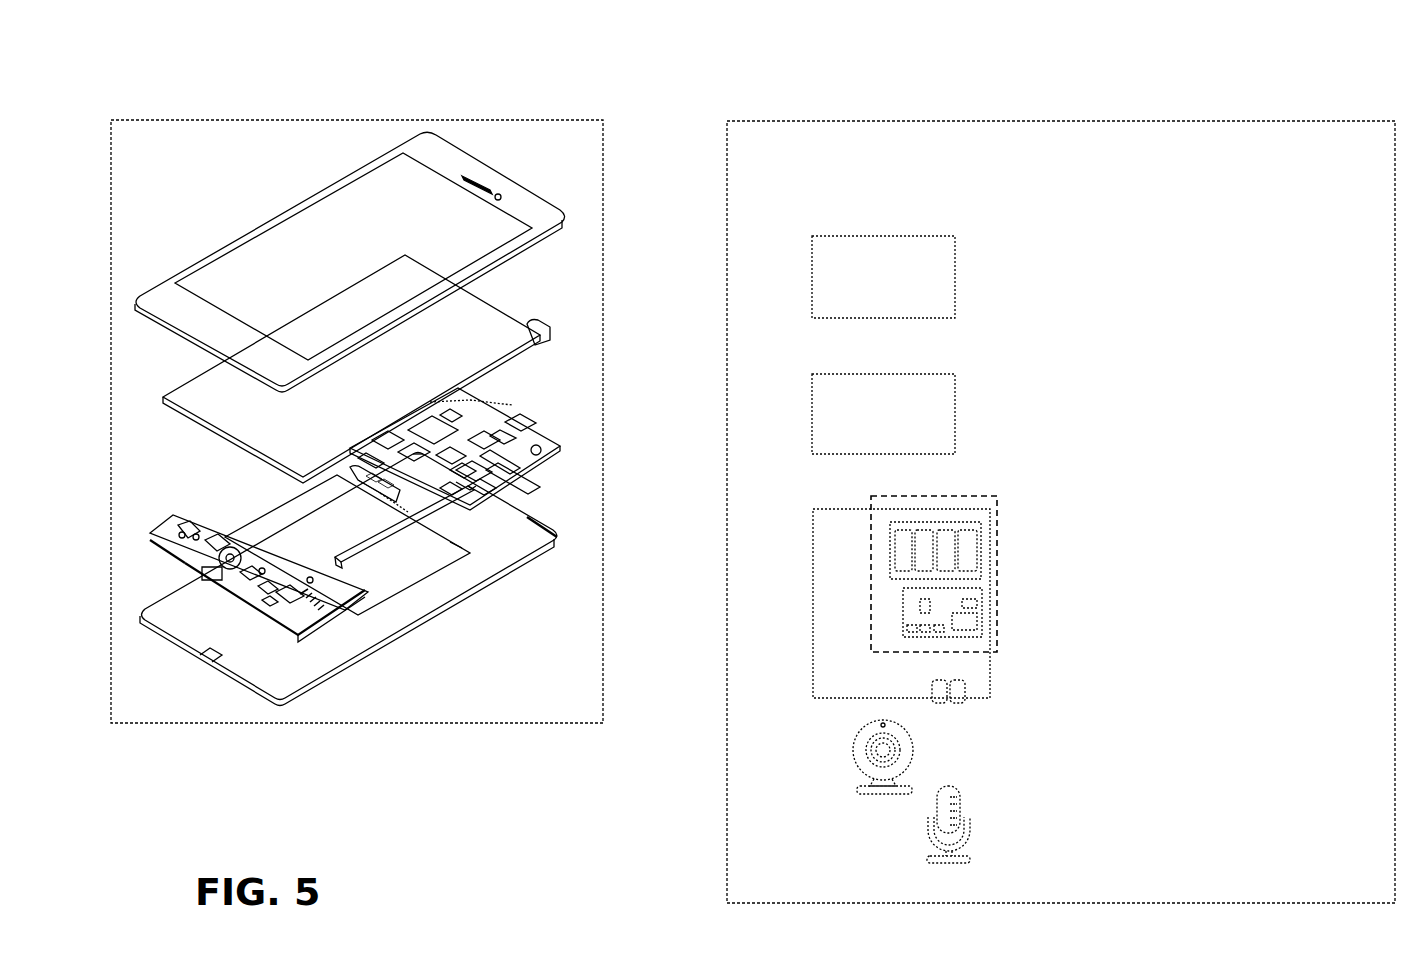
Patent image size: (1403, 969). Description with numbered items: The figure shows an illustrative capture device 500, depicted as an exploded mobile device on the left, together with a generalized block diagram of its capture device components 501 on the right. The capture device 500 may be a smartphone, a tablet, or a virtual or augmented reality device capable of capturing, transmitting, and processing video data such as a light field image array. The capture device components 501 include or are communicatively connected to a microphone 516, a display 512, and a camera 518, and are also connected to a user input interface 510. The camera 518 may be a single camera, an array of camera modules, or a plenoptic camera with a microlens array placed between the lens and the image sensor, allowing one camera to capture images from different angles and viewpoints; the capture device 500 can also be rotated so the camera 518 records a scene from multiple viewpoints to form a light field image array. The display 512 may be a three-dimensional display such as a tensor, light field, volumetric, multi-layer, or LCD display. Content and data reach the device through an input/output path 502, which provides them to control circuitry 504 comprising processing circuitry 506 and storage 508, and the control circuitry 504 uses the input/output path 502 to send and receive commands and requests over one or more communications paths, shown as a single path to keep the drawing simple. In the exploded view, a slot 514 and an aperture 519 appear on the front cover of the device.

The capture device 500 is at (200, 80).
The capture device components 501 is at (1265, 74).
The input/output path 502 is at (238, 563).
The control circuitry 504 is at (870, 582).
The processing circuitry 506 is at (880, 561).
The storage 508 is at (880, 522).
The user input interface 510 is at (466, 340).
The display 512 is at (812, 409).
The speaker slot 514 is at (492, 186).
The microphone 516 is at (316, 597).
The camera 518 is at (846, 727).
The front camera aperture 519 is at (502, 197).